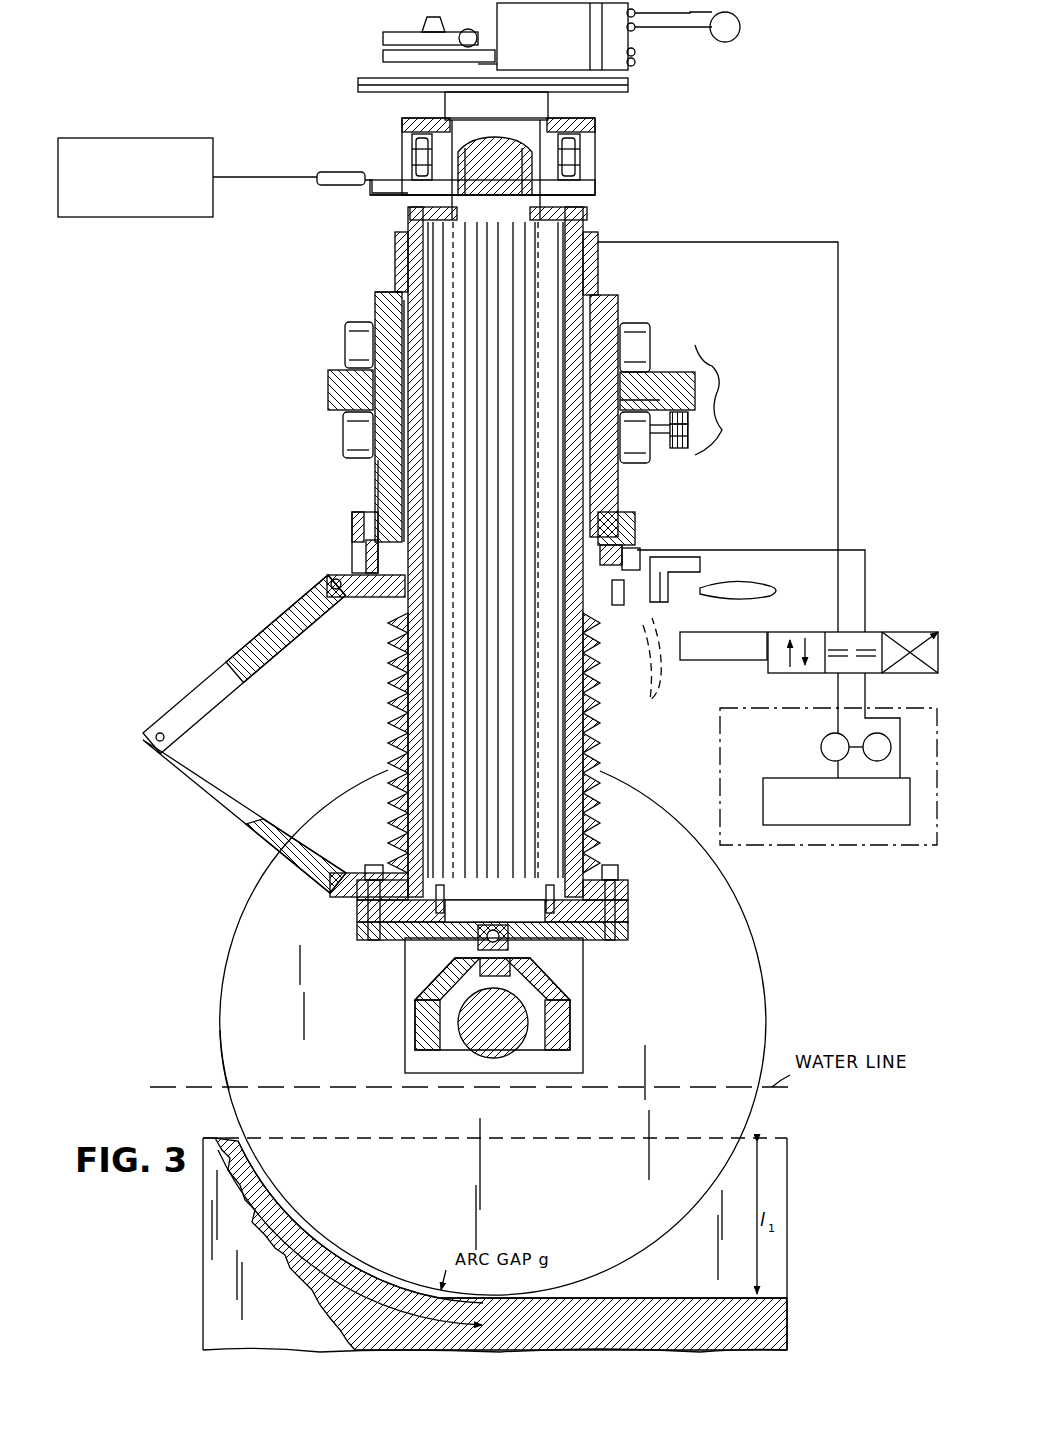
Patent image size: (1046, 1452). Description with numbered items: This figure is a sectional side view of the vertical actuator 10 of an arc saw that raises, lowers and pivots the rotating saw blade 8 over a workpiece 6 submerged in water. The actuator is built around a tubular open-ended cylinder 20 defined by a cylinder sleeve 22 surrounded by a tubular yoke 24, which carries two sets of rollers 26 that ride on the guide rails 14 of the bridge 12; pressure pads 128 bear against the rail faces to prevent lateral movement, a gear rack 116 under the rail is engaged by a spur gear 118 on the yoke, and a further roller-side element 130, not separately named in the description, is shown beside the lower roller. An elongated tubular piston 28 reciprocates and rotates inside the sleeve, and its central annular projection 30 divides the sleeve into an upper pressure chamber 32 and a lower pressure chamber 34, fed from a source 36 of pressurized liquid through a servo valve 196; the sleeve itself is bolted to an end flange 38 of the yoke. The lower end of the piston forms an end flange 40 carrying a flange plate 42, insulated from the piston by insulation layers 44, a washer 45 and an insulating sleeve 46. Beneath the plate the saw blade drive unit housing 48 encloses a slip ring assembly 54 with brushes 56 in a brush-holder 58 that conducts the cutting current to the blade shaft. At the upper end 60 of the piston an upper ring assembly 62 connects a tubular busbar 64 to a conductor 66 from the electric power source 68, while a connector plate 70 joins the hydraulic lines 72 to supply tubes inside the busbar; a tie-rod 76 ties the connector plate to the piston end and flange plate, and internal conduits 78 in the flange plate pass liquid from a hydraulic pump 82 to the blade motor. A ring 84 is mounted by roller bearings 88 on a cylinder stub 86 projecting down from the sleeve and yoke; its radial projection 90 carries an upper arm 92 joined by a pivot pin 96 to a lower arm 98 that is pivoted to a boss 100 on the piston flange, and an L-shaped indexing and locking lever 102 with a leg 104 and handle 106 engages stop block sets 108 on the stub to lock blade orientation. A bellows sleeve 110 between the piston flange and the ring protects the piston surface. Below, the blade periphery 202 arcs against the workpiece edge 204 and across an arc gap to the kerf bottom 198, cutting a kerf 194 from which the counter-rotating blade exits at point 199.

The workpiece 6 is at (203, 1246).
The saw blade 8 is at (225, 1015).
The vertical actuator 10 is at (268, 218).
The bridge 12 is at (720, 396).
The guide rails 14 is at (695, 388).
The cylinder 20 is at (372, 294).
The cylinder sleeve 22 is at (395, 268).
The yoke 24 is at (375, 302).
The rollers 26 is at (345, 344).
The piston 28 is at (398, 474).
The annular projection 30 is at (400, 490).
The upper pressure chamber 32 is at (328, 390).
The lower pressure chamber 34 is at (352, 536).
The source of pressurized liquid 36 is at (815, 845).
The end flange 38 is at (640, 522).
The end flange 40 is at (602, 866).
The flange plate 42 is at (628, 933).
The insulation layers 44 is at (628, 909).
The washer 45 is at (620, 871).
The insulating sleeve 46 is at (628, 887).
The electrode housing 48 is at (586, 990).
The slip ring assembly 54 is at (412, 1003).
The brushes 56 is at (460, 1022).
The brush-holder 58 is at (445, 975).
The upper end of the piston 60 is at (408, 220).
The upper ring assembly 62 is at (600, 150).
The tubular busbar 64 is at (540, 262).
The conductor 66 is at (350, 172).
The electric power source 68 is at (171, 142).
The connector plate 70 is at (358, 84).
The hydraulic lines 72 is at (470, 280).
The tie-rod 76 is at (548, 200).
The internal conduits 78 is at (508, 938).
The hydraulic pump 82 is at (740, 27).
The ring 84 is at (618, 605).
The cylinder stub 86 is at (630, 552).
The roller bearings 88 is at (634, 620).
The radial projection 90 is at (327, 581).
The upper arm 92 is at (268, 632).
The pivot pin 96 is at (156, 730).
The lower arm 98 is at (262, 843).
The boss 100 is at (330, 896).
The indexing and locking lever 102 is at (702, 575).
The leg 104 is at (660, 588).
The handle 106 is at (762, 583).
The stop block sets 108 is at (655, 568).
The bellows sleeve 110 is at (600, 746).
The gear rack 116 is at (688, 418).
The spur gear 118 is at (688, 440).
The pressure pads 128 is at (655, 374).
The lower guide roller 130 is at (648, 452).
The kerf 194 is at (787, 1202).
The servo valve 196 is at (882, 634).
The kerf bottom 198 is at (787, 1284).
The exit point 199 is at (250, 1142).
The blade periphery 202 is at (222, 1058).
The workpiece edge 204 is at (792, 1138).